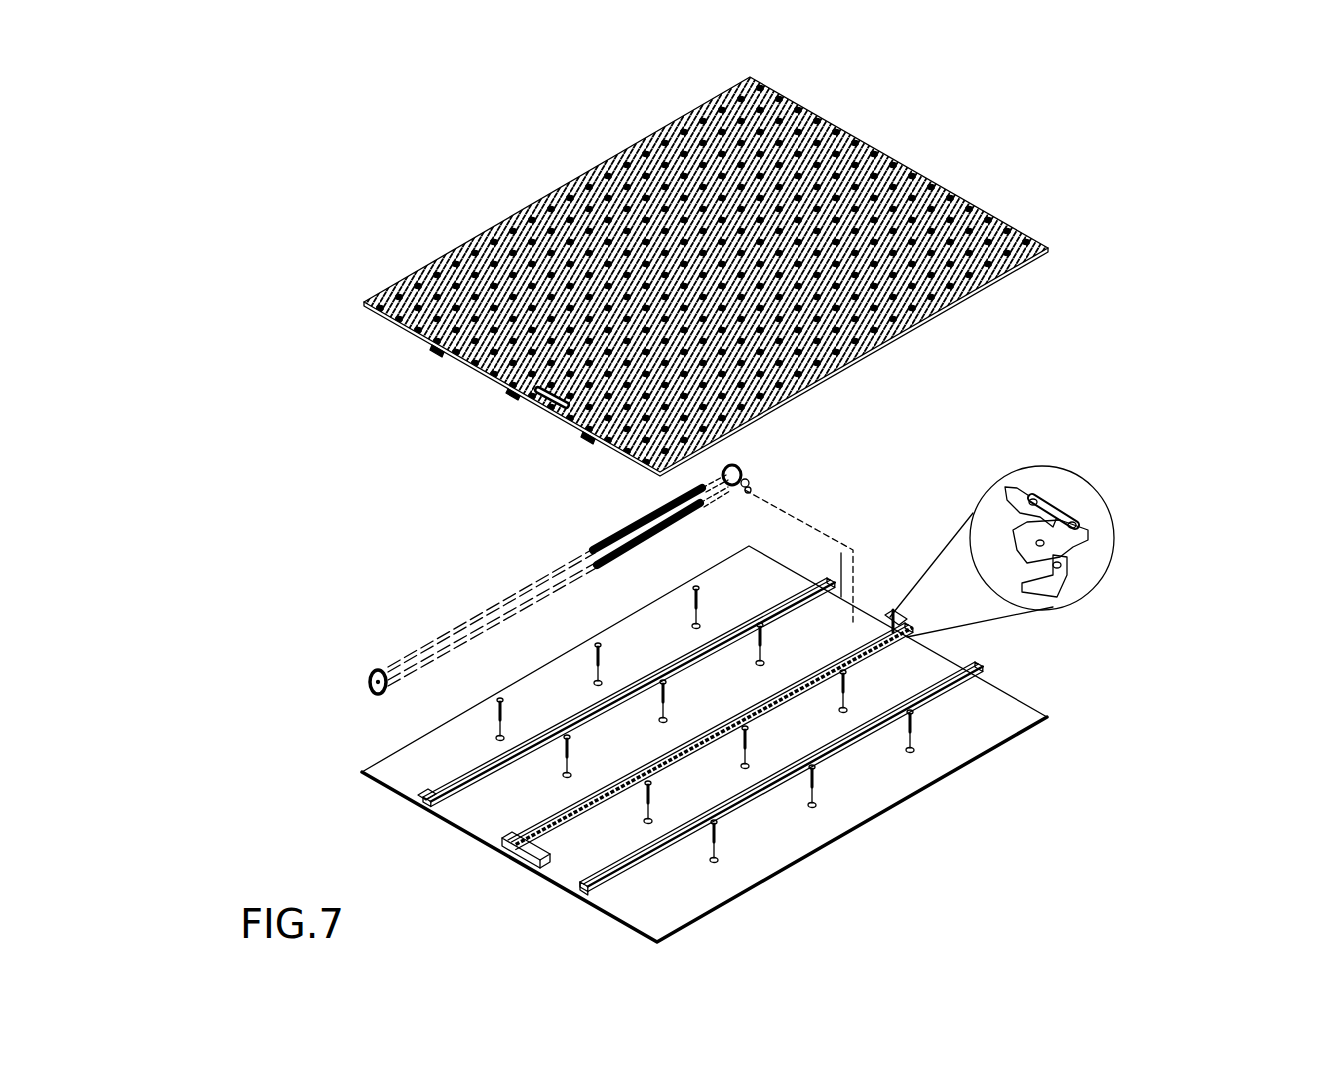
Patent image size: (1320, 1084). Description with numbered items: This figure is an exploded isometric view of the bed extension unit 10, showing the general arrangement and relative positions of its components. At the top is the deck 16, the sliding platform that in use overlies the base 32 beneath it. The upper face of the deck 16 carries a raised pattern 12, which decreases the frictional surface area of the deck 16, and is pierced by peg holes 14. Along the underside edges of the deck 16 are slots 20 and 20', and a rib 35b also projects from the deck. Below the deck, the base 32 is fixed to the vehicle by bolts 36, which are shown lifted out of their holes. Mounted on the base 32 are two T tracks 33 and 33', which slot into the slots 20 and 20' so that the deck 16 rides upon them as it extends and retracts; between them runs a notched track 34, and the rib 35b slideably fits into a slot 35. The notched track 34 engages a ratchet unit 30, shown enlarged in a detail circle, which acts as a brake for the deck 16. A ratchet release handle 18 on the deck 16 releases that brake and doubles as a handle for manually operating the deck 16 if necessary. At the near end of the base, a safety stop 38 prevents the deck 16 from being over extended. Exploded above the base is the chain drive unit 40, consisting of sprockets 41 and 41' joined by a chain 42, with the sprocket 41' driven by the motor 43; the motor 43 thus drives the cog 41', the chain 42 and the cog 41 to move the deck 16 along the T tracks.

The bed extension unit 10 is at (746, 284).
The raised pattern 12 is at (985, 278).
The peg holes 14 is at (963, 216).
The deck 16 is at (914, 170).
The ratchet release handle 18 is at (533, 400).
The slot 20 is at (392, 343).
The slot 20' is at (540, 462).
The ratchet unit 30 is at (1120, 465).
The base 32 is at (915, 767).
The T track 33 is at (822, 768).
The T track 33' is at (587, 705).
The notched track 34 is at (679, 742).
The slot 35 is at (670, 757).
The rib 35b is at (513, 393).
The bolts 36 is at (692, 595).
The safety stop 38 is at (525, 860).
The chain drive unit 40 is at (621, 548).
The sprocket 41 is at (481, 621).
The sprocket 41' is at (647, 494).
The chain 42 is at (597, 545).
The motor 43 is at (743, 480).